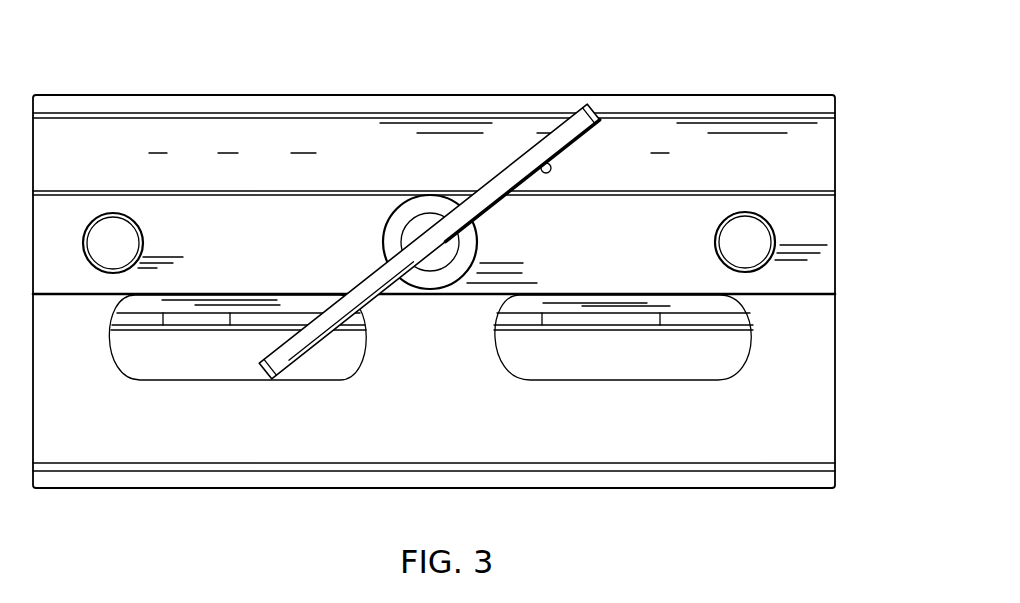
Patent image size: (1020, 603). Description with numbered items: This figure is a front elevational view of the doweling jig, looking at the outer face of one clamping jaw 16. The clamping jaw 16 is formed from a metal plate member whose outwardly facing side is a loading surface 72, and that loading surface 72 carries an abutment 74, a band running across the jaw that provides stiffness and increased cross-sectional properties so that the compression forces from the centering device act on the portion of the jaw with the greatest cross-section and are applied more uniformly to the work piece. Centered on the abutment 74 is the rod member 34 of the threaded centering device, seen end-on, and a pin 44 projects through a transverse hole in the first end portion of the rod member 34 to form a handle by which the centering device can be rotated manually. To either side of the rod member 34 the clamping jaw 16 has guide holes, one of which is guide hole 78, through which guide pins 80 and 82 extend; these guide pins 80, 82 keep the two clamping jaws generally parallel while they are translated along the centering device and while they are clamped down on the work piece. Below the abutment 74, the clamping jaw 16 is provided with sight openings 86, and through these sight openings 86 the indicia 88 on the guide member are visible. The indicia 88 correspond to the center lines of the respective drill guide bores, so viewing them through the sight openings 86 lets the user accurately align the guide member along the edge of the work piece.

The clamp jaw 16 is at (852, 329).
The rod member 34 is at (428, 203).
The pin 44 is at (560, 138).
The loading surface 72 is at (808, 378).
The abutment 74 is at (817, 273).
The guide hole 78 is at (107, 212).
The guide pin 80 is at (117, 242).
The guide pin 82 is at (743, 232).
The sight openings 86 is at (168, 377).
The indicia 88 is at (540, 323).